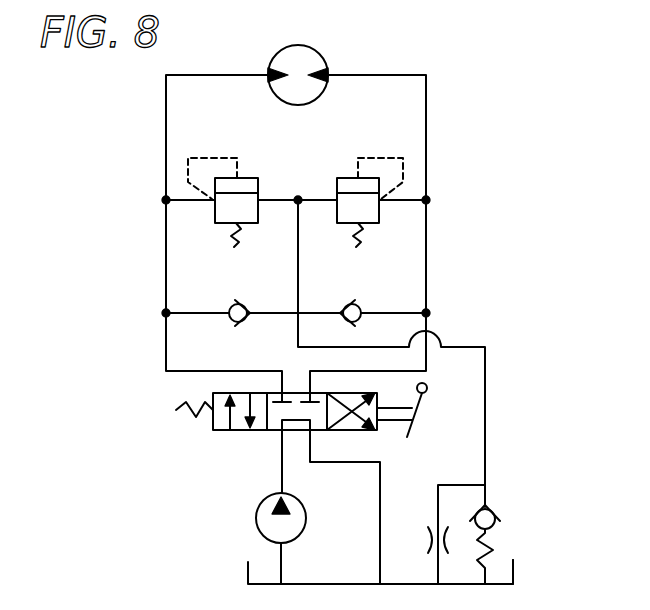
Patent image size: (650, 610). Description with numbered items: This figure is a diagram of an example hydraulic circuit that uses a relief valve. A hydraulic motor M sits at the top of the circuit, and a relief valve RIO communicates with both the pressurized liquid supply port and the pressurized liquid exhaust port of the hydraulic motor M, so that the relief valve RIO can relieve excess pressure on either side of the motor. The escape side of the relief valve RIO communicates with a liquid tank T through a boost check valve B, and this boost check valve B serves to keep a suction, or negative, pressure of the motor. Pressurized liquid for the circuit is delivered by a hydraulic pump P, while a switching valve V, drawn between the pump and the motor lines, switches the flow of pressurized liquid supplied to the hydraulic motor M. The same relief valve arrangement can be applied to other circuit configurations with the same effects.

The hydraulic motor M is at (310, 45).
The relief valve RIO is at (250, 178).
The switching valve V is at (222, 432).
The hydraulic pump P is at (255, 527).
The boost check valve B is at (488, 545).
The liquid tank T is at (513, 568).